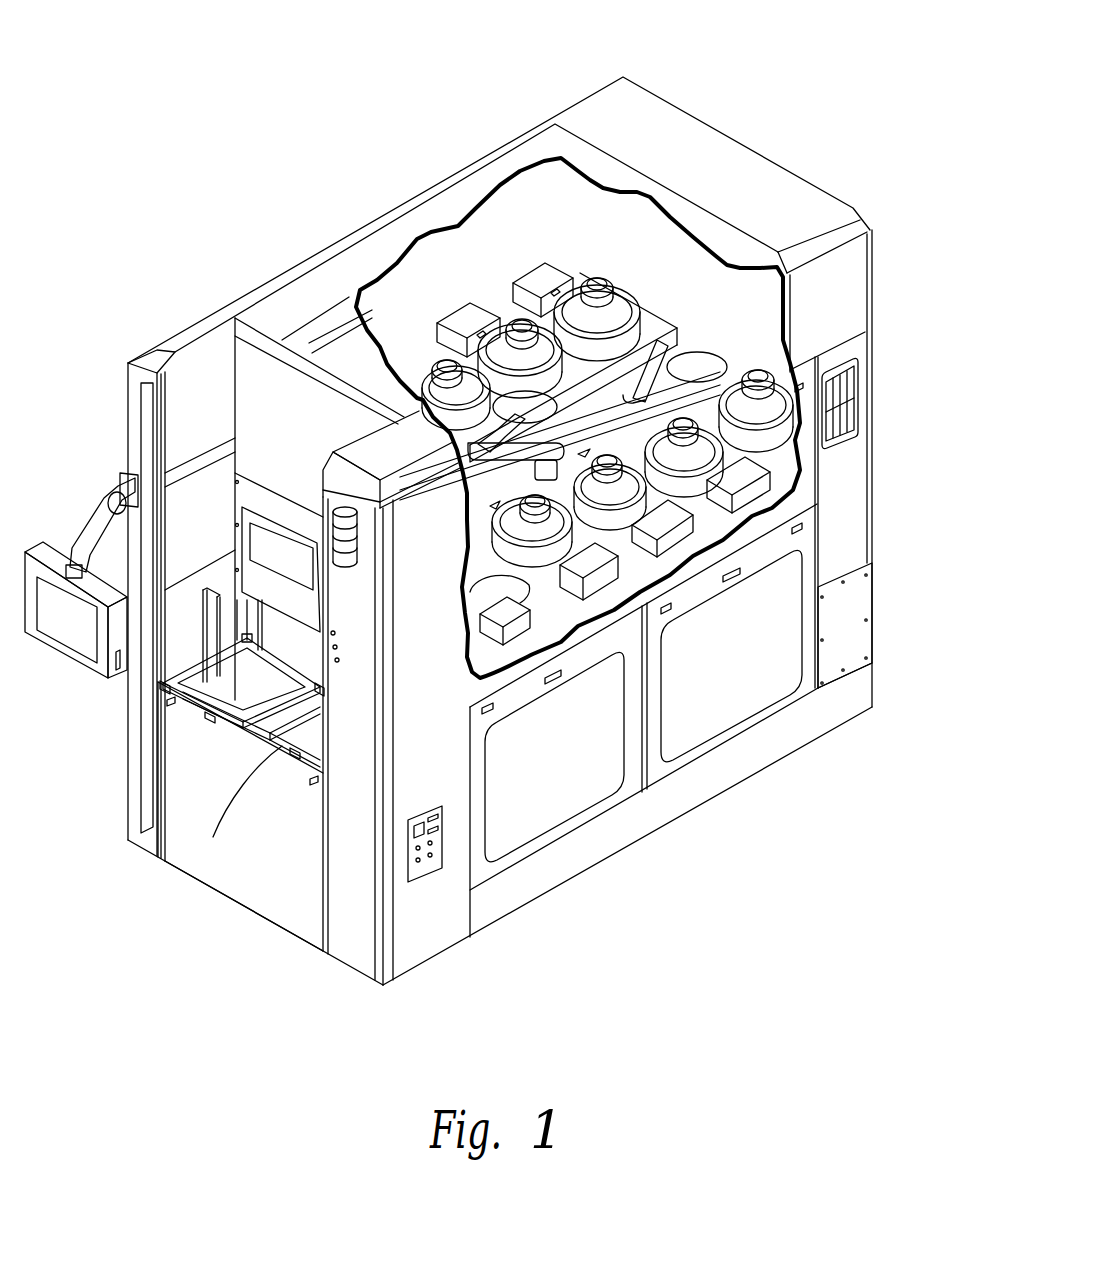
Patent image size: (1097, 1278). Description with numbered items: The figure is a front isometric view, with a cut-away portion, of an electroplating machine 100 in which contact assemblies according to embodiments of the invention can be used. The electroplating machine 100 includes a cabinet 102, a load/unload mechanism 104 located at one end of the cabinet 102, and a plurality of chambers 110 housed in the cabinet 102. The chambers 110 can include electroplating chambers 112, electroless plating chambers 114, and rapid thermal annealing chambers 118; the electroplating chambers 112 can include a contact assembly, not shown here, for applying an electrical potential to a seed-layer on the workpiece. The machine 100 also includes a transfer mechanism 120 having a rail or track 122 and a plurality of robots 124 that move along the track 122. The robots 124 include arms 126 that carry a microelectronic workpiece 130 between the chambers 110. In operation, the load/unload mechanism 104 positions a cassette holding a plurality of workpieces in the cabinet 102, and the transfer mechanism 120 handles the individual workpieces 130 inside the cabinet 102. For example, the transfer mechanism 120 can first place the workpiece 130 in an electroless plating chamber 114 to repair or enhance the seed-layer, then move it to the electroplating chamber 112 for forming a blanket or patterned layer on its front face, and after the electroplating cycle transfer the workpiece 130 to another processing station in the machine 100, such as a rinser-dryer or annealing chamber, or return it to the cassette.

The electroplating machine 100 is at (472, 535).
The cabinet 102 is at (500, 529).
The load/unload mechanism 104 is at (240, 712).
The chambers 110 is at (658, 298).
The electroplating chamber 112 is at (683, 453).
The electroless plating chamber 114 is at (623, 493).
The rapid thermal annealing chamber 118 is at (770, 412).
The transfer mechanism 120 is at (464, 415).
The track 122 is at (467, 510).
The robots 124 is at (568, 410).
The arms 126 is at (450, 456).
The microelectronic workpiece 130 is at (530, 397).